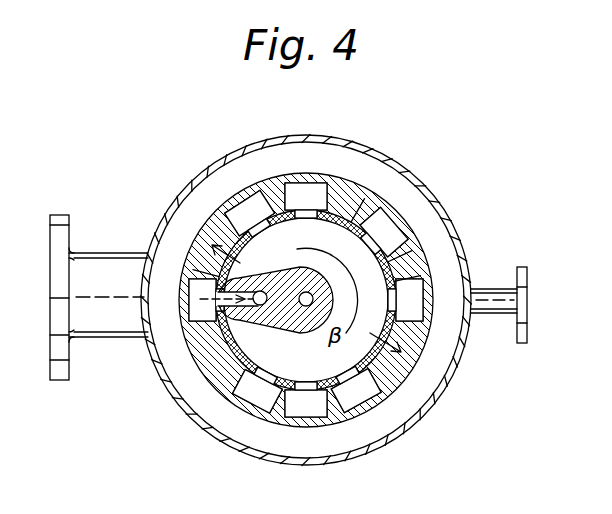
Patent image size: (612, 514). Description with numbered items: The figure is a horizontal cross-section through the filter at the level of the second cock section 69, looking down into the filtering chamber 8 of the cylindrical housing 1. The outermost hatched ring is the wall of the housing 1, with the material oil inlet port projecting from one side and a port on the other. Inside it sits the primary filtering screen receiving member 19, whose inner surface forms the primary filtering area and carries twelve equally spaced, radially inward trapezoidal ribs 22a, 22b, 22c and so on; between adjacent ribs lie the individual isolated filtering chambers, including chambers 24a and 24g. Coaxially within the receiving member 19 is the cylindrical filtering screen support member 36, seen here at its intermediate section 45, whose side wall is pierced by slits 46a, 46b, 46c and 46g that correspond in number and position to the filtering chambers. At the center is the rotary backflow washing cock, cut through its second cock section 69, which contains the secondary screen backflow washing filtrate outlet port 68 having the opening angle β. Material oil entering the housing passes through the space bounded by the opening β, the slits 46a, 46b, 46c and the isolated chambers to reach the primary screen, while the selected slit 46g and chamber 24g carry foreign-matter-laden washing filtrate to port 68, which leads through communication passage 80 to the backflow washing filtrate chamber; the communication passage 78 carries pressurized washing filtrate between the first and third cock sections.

The housing 1 is at (416, 428).
The filtering chamber 8 is at (422, 390).
The primary filtering screen receiving member 19 is at (418, 360).
The rib 22a is at (412, 322).
The rib 22b is at (420, 298).
The rib 22c is at (395, 235).
The outlet port 24a is at (487, 316).
The isolated filtering chamber 24g is at (140, 253).
The filtering screen support member 36 is at (477, 289).
The intermediate section 45 is at (534, 293).
The slit 46a is at (380, 265).
The slit 46b is at (445, 278).
The slit 46c is at (363, 212).
The slit 46g is at (185, 283).
The secondary screen backflow washing filtrate outlet port 68 is at (183, 332).
The second cock section 69 is at (213, 362).
The communication passage 78 is at (317, 345).
The communication passage 80 is at (266, 257).